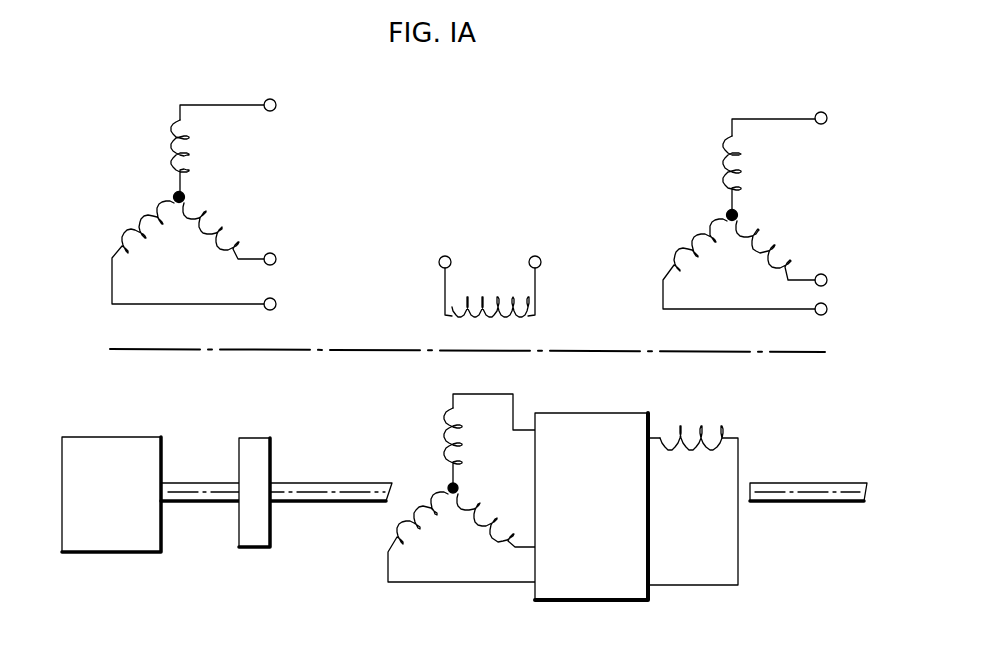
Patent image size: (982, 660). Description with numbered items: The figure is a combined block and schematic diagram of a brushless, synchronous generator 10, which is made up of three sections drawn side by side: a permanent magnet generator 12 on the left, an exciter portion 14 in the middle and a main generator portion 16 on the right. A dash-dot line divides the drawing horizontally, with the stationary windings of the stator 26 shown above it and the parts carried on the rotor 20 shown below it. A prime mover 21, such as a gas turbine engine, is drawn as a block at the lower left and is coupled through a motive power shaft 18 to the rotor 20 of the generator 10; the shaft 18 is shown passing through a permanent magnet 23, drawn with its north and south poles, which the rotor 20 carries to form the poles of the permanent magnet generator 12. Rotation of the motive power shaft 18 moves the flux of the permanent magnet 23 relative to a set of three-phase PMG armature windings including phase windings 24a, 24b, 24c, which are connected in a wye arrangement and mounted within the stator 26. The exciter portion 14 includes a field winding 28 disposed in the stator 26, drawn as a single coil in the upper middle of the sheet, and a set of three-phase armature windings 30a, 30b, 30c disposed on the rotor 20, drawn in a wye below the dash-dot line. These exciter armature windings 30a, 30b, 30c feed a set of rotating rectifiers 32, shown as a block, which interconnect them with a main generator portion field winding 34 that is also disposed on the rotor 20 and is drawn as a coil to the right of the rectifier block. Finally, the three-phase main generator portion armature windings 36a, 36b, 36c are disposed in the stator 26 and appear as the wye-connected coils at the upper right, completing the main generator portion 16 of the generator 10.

The brushless synchronous generator 10 is at (751, 226).
The permanent magnet generator 12 is at (185, 204).
The exciter portion 14 is at (398, 262).
The main generator portion 16 is at (574, 262).
The motive power shaft 18 is at (190, 505).
The rotor 20 is at (417, 515).
The prime mover 21 is at (113, 553).
The permanent magnet 23 is at (258, 437).
The PMG armature phase winding 24a is at (173, 148).
The PMG armature phase winding 24b is at (222, 228).
The PMG armature phase winding 24c is at (150, 220).
The stator 26 is at (122, 330).
The field winding 28 is at (450, 315).
The exciter armature winding 30a is at (448, 418).
The exciter armature winding 30b is at (485, 510).
The exciter armature winding 30c is at (378, 530).
The rotating rectifiers 32 is at (532, 595).
The main generator portion field winding 34 is at (686, 428).
The main generator portion armature winding 36a is at (727, 155).
The main generator portion armature winding 36b is at (770, 237).
The main generator portion armature winding 36c is at (703, 228).